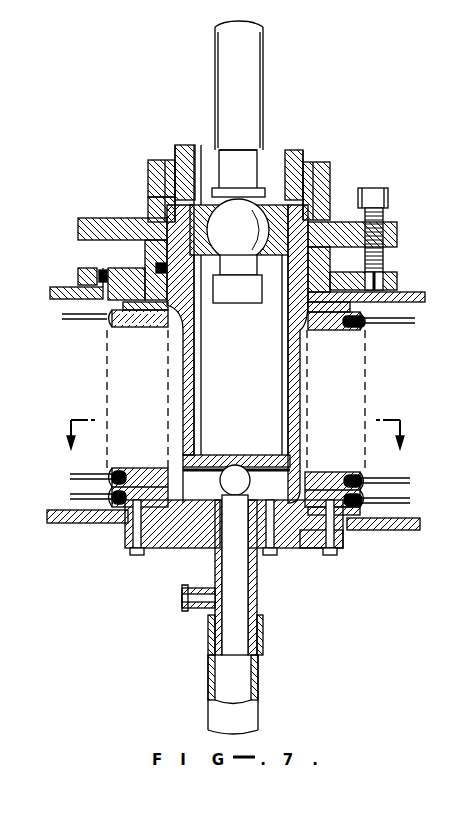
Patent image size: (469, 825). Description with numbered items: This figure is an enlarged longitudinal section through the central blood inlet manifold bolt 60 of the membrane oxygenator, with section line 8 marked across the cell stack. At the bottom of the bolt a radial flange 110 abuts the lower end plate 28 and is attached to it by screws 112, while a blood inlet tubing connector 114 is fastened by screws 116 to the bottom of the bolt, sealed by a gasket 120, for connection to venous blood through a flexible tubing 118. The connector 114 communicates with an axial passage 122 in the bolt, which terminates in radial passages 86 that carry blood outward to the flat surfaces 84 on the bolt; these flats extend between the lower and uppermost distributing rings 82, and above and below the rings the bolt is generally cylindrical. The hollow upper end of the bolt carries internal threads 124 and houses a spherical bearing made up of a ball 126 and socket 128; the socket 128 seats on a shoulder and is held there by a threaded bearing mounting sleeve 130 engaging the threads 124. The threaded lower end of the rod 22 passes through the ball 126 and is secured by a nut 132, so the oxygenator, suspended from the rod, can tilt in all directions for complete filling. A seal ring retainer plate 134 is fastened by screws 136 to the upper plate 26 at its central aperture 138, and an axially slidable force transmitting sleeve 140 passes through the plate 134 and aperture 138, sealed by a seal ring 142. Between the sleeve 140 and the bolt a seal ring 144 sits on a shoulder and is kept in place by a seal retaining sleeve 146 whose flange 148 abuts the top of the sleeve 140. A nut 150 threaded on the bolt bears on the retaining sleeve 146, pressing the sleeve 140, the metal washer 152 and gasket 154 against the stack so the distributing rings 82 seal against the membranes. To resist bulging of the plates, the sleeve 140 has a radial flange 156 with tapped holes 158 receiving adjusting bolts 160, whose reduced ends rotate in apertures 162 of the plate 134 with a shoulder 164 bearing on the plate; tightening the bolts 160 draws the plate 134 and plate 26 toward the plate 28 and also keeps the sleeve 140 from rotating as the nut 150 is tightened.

The rod 22 is at (252, 94).
The upper plate or wall 26 is at (425, 296).
The lower end plate 28 is at (414, 533).
The blood inlet manifold bolt 60 is at (300, 399).
The distributing rings 82 is at (150, 326).
The flat surfaces 84 is at (292, 380).
The radial passages 86 is at (242, 471).
The radial flange 110 is at (307, 549).
The screws 112 is at (338, 549).
The blood inlet tubing connector 114 is at (259, 597).
The screws 116 is at (272, 553).
The flexible tubing 118 is at (256, 690).
The gasket 120 is at (211, 533).
The axial passage 122 is at (226, 500).
The internal threads 124 is at (289, 158).
The ball 126 is at (252, 243).
The socket 128 is at (203, 240).
The threaded bearing mounting sleeve 130 is at (185, 147).
The nut 132 is at (235, 301).
The seal ring retainer plate 134 is at (78, 278).
The screws 136 is at (100, 268).
The central aperture 138 is at (318, 335).
The force transmitting sleeve 140 is at (156, 268).
The seal ring 142 is at (120, 303).
The seal ring 144 is at (157, 261).
The seal retaining sleeve 146 is at (150, 222).
The flange 148 is at (150, 196).
The nut 150 is at (150, 168).
The metal washer 152 is at (365, 332).
The gasket 154 is at (375, 322).
The radial flange 156 is at (398, 236).
The tapped holes 158 is at (385, 222).
The adjusting bolts 160 is at (390, 196).
The apertures 162 is at (398, 283).
The shoulder 164 is at (388, 270).
The section line 8- 8 is at (234, 402).